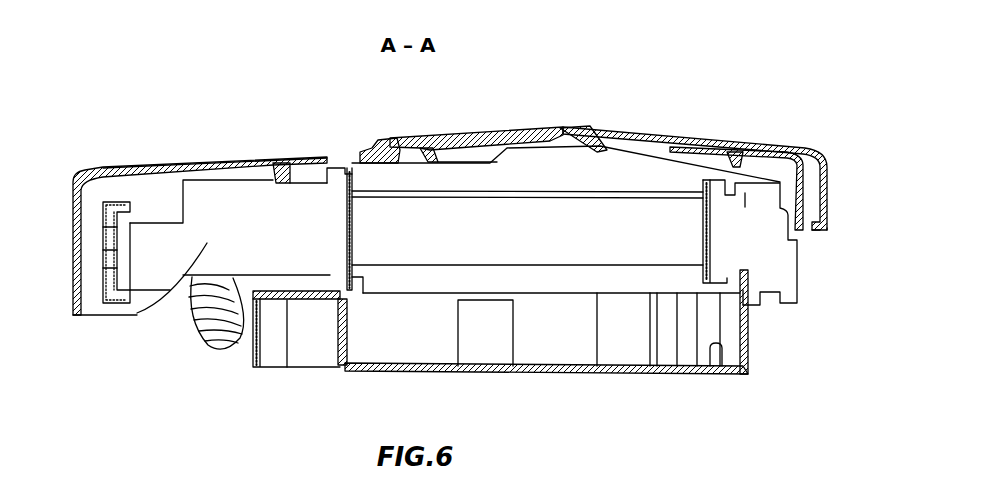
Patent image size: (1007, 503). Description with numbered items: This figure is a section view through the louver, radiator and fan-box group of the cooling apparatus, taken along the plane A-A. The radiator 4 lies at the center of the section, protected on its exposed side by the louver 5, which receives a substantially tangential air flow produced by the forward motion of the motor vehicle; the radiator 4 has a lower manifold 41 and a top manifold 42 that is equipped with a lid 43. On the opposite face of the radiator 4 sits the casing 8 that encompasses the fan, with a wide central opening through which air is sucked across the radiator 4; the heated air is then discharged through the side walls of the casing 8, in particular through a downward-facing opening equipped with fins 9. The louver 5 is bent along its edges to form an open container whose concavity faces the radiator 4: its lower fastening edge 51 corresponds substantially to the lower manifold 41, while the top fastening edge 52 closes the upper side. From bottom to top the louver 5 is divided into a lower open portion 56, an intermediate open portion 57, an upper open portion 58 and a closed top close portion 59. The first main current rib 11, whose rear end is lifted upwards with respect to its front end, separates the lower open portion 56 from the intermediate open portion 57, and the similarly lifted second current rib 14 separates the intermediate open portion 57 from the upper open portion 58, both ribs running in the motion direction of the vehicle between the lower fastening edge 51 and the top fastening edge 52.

The radiator 4 is at (563, 233).
The louver 5 is at (680, 100).
The casing 8 is at (388, 342).
The fins 9 is at (731, 348).
The first main current rib 11 is at (582, 122).
The second current rib 14 is at (402, 140).
The lower manifold 41 is at (760, 250).
The top manifold 42 is at (187, 277).
The lid 43 is at (113, 225).
The lower fastening edge 51 is at (807, 163).
The top fastening edge 52 is at (75, 320).
The lower open portion 56 is at (724, 142).
The intermediate open portion 57 is at (466, 134).
The upper open portion 58 is at (334, 162).
The top close portion 59 is at (205, 160).